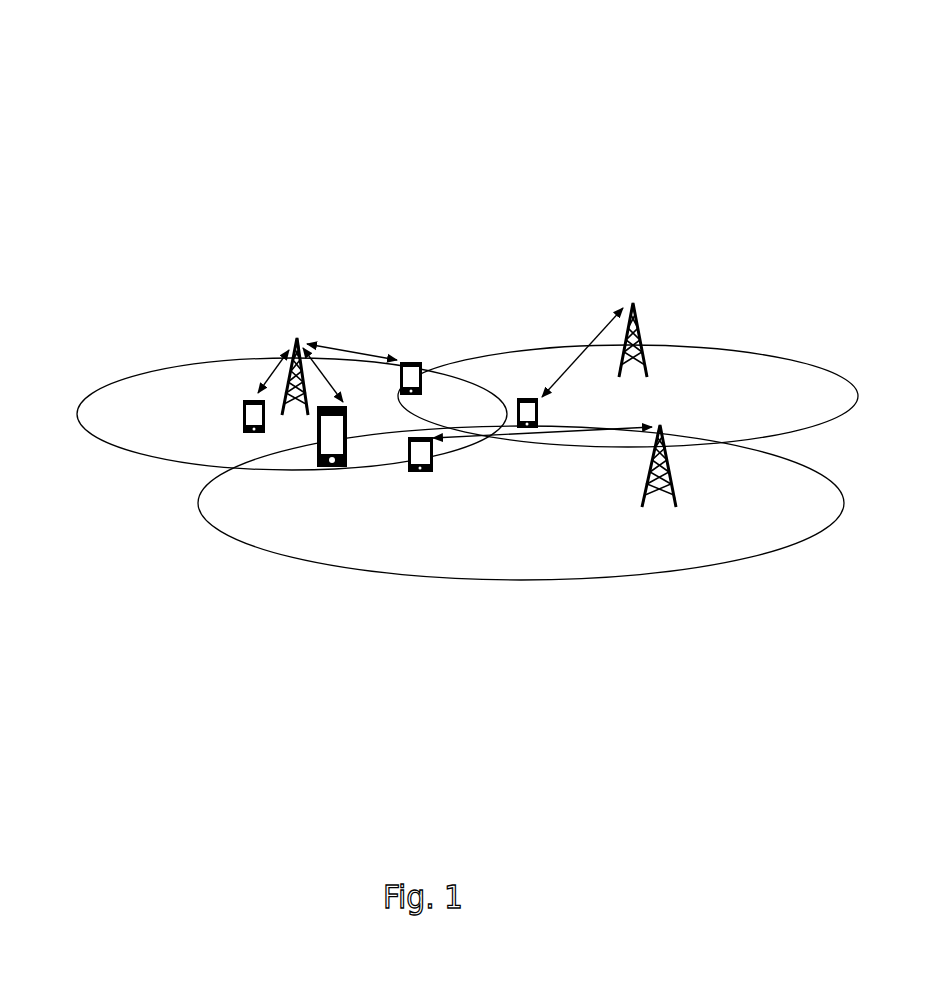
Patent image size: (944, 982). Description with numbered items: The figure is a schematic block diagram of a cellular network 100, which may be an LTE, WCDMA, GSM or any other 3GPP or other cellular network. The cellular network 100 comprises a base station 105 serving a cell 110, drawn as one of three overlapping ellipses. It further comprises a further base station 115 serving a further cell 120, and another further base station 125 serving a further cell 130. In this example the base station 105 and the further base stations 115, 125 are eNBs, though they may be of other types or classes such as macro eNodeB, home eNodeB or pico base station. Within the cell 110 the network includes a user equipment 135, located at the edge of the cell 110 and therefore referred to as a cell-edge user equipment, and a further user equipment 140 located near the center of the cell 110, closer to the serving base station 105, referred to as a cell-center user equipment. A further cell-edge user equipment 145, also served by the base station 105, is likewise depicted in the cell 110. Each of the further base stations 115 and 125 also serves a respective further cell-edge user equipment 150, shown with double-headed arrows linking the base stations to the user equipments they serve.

The cellular network 100 is at (316, 101).
The base station 105 is at (297, 338).
The cell 110 is at (108, 383).
The further base station 115 is at (669, 475).
The further cell 120 is at (550, 581).
The further base station 125 is at (633, 303).
The further cell 130 is at (738, 350).
The user equipment 135 is at (317, 455).
The further user equipment 140 is at (247, 401).
The further cell-edge user equipment 145 is at (414, 362).
The further cell-edge user equipment 150 is at (530, 428).